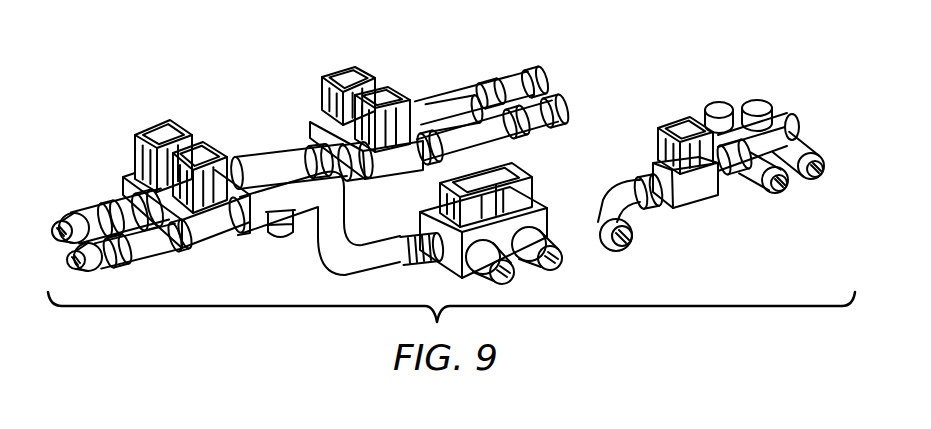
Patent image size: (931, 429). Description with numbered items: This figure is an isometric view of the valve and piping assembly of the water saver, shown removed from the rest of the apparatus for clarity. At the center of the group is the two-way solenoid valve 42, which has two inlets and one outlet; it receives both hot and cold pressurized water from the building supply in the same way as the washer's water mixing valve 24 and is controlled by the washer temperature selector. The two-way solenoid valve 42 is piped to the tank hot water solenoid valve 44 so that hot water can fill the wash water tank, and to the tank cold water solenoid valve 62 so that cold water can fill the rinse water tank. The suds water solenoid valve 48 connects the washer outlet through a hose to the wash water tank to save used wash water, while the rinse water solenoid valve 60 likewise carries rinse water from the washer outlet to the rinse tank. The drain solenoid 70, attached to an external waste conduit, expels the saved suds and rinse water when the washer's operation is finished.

The water mixing valve 24 is at (742, 110).
The two-way solenoid valve 42 is at (598, 170).
The tank hot water solenoid valve 44 is at (267, 110).
The suds water solenoid valve 48 is at (140, 134).
The rinse water solenoid valve 60 is at (358, 70).
The tank cold water solenoid valve 62 is at (413, 98).
The drain solenoid 70 is at (699, 210).